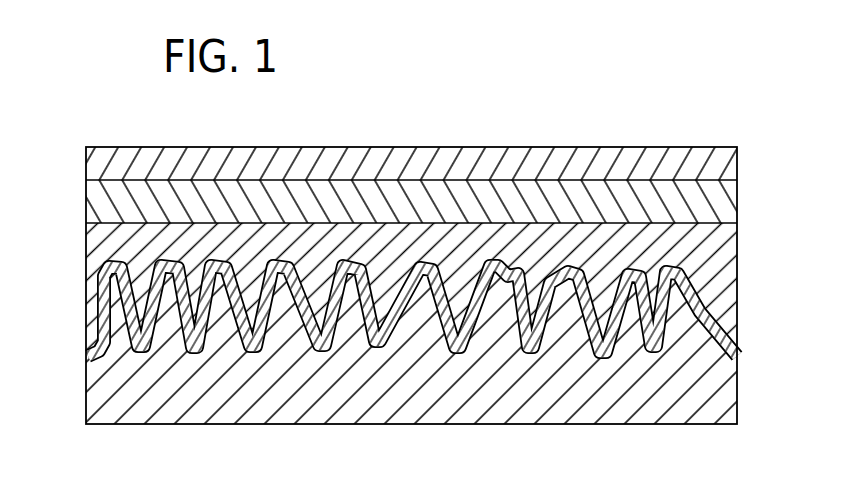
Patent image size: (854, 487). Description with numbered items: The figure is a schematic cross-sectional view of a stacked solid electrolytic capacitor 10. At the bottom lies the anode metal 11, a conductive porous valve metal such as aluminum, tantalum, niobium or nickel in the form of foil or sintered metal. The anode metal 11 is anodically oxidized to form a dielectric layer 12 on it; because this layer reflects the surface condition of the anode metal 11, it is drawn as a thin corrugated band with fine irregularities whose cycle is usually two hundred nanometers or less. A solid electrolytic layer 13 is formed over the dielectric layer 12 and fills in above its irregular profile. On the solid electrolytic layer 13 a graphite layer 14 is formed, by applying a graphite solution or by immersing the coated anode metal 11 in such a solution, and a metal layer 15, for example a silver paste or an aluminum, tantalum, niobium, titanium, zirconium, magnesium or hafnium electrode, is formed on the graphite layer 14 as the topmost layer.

The solid electrolytic capacitor 10 is at (685, 99).
The anode metal 11 is at (727, 398).
The dielectric layer 12 is at (716, 331).
The solid electrolytic layer 13 is at (722, 278).
The graphite layer 14 is at (724, 201).
The metal layer 15 is at (732, 168).